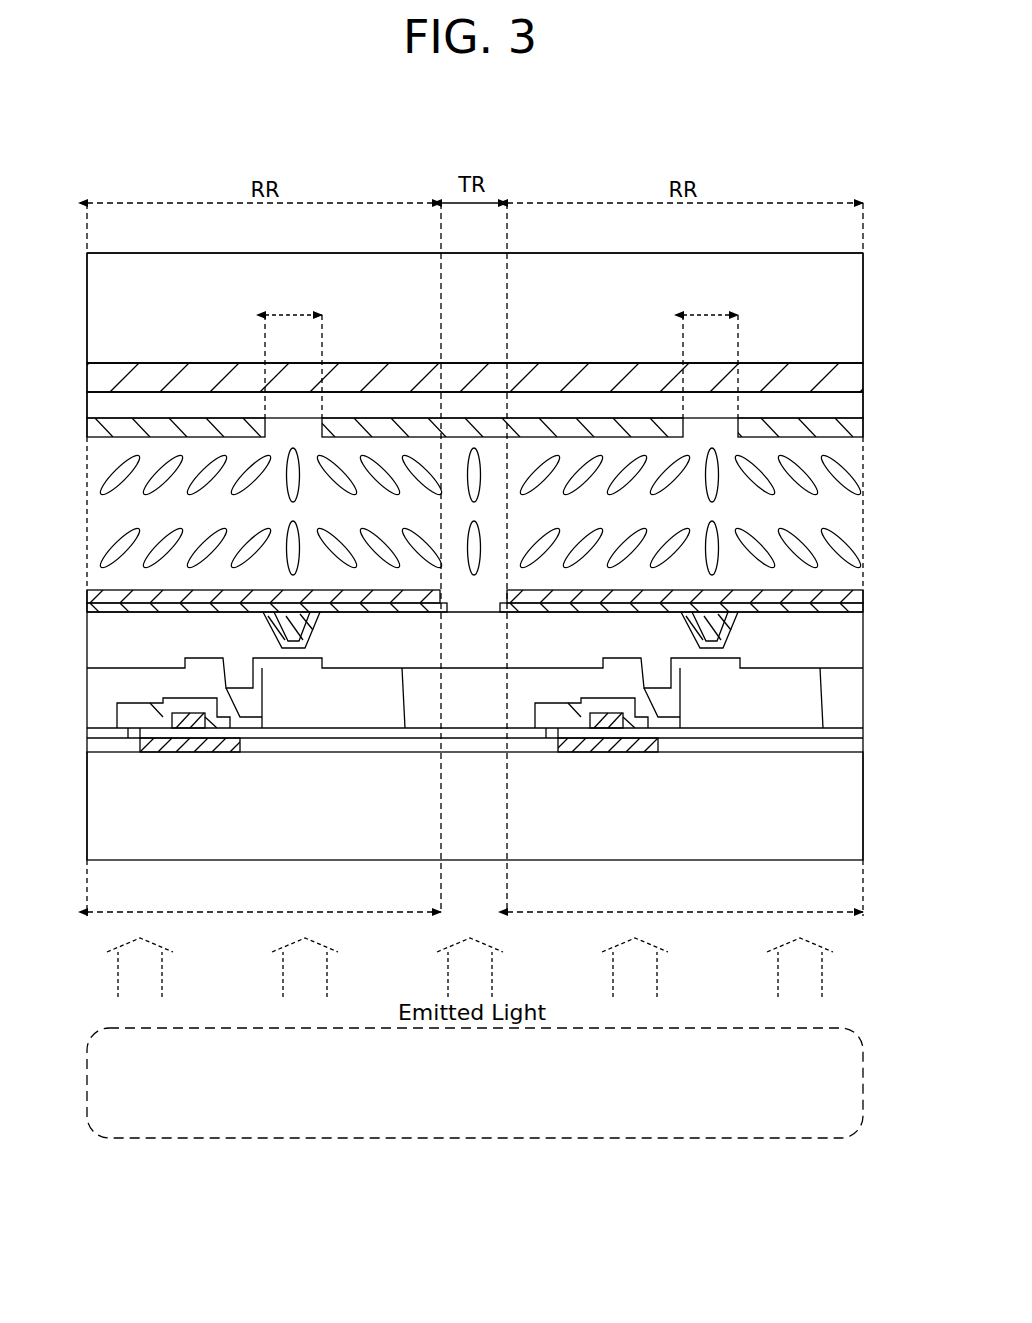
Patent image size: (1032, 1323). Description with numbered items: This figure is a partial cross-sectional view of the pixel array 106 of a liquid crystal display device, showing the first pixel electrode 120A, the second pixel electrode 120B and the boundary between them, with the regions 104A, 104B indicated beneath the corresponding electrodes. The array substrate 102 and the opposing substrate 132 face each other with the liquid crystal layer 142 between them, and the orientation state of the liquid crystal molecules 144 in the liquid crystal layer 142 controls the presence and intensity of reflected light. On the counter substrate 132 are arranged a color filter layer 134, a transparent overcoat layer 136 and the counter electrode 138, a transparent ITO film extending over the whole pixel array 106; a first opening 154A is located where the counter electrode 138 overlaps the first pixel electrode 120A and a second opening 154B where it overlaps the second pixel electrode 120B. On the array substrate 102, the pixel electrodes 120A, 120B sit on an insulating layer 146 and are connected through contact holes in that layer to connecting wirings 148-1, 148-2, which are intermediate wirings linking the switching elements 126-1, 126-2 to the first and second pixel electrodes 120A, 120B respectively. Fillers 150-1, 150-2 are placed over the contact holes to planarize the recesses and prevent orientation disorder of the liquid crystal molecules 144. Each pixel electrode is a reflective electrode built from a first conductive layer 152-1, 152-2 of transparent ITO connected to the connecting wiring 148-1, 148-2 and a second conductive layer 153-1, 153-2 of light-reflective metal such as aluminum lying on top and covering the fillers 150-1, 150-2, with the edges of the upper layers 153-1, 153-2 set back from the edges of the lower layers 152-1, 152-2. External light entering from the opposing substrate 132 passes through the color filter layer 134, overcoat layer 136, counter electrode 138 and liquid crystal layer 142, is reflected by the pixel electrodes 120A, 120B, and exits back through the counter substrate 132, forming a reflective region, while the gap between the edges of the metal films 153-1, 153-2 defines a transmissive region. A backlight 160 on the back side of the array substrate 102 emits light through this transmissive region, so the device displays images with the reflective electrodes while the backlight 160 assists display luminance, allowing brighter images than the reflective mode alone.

The pixel array 106 is at (183, 186).
The opposing substrate 132 is at (853, 313).
The color filter layer 134 is at (87, 378).
The overcoat layer 136 is at (853, 410).
The counter electrode 138 is at (87, 428).
The first opening 154A is at (710, 352).
The second opening 154B is at (293, 352).
The liquid crystal layer 142 is at (850, 522).
The liquid crystal molecules 144 is at (848, 490).
The insulating layer 146 is at (87, 638).
The connecting wiring 148-1 is at (722, 668).
The connecting wiring 148-2 is at (304, 668).
The filler 150-1 is at (690, 617).
The filler 150-2 is at (272, 617).
The first conductive layer 152-1 is at (765, 608).
The first conductive layer 152-2 is at (347, 608).
The second conductive layer 153-1 is at (823, 595).
The second conductive layer 153-2 is at (405, 595).
The first pixel electrode 120A is at (725, 789).
The second pixel electrode 120B is at (305, 789).
The switching element 126-1 is at (603, 757).
The switching element 126-2 is at (185, 757).
The array substrate 102 is at (853, 838).
The first pixel region 104A is at (685, 888).
The second pixel region 104B is at (264, 888).
The backlight 160 is at (235, 1028).